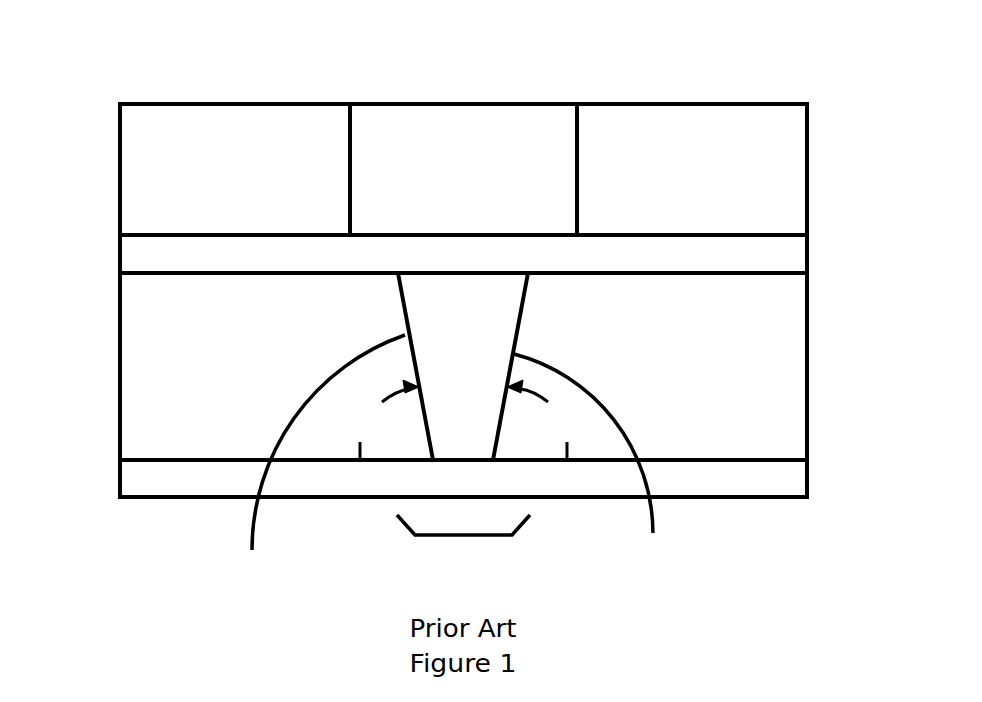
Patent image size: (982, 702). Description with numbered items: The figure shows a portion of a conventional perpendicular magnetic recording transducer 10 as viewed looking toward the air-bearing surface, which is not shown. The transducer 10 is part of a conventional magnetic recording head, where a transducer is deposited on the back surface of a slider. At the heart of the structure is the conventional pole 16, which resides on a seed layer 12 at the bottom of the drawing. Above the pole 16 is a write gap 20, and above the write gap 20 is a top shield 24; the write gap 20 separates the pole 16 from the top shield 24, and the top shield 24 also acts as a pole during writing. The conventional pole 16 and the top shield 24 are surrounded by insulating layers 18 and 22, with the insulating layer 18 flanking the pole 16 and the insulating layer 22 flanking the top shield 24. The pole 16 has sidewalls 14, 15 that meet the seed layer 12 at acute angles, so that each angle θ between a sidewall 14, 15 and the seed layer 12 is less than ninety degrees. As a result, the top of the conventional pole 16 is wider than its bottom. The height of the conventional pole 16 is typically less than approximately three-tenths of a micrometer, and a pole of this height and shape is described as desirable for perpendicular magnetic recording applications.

The perpendicular magnetic recording transducer 10 is at (479, 44).
The seed layer 12 is at (118, 468).
The sidewall 14 is at (329, 460).
The sidewall 15 is at (588, 462).
The conventional pole 16 is at (463, 535).
The insulating layer 18 is at (119, 380).
The write gap 20 is at (118, 253).
The insulating layer 22 is at (119, 106).
The top shield 24 is at (482, 104).